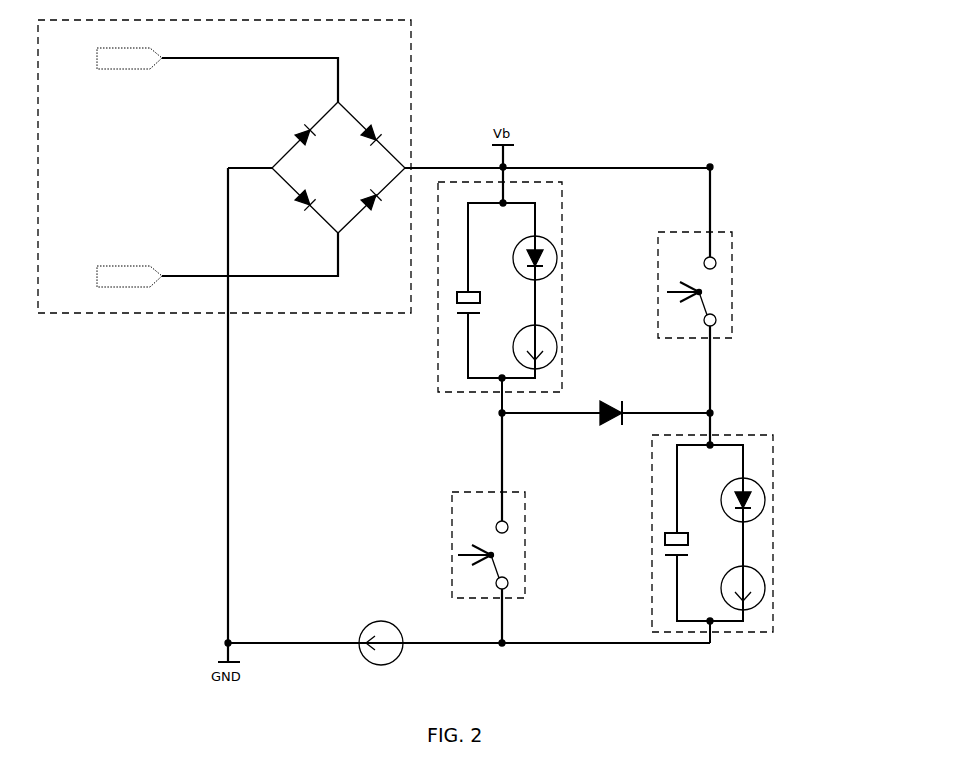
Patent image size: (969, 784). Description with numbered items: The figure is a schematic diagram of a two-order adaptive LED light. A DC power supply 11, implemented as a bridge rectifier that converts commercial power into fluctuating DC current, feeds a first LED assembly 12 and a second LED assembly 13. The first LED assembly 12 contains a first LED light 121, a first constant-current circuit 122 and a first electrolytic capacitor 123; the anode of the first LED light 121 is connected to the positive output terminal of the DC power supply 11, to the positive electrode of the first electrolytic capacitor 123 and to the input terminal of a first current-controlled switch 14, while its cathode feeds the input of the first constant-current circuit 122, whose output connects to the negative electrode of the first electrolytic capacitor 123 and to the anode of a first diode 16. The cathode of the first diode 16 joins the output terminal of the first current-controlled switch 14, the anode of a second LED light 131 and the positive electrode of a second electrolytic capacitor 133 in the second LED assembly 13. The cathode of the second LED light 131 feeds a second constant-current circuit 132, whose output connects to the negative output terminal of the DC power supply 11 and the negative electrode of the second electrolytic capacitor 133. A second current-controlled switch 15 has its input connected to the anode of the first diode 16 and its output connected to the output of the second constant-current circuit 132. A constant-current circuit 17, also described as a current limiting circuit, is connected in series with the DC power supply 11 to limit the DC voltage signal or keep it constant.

The DC power supply 11 is at (374, 331).
The first LED assembly 12 is at (524, 297).
The first LED light 121 is at (558, 255).
The first constant-current circuit 122 is at (565, 325).
The first electrolytic capacitor 123 is at (442, 328).
The second LED assembly 13 is at (729, 536).
The second LED light 131 is at (788, 476).
The second constant-current circuit 132 is at (788, 599).
The second electrolytic capacitor 133 is at (645, 561).
The first current-controlled switch 14 is at (730, 304).
The second current-controlled switch 15 is at (522, 528).
The first diode 16 is at (606, 397).
The constant-current circuit 17 is at (417, 654).